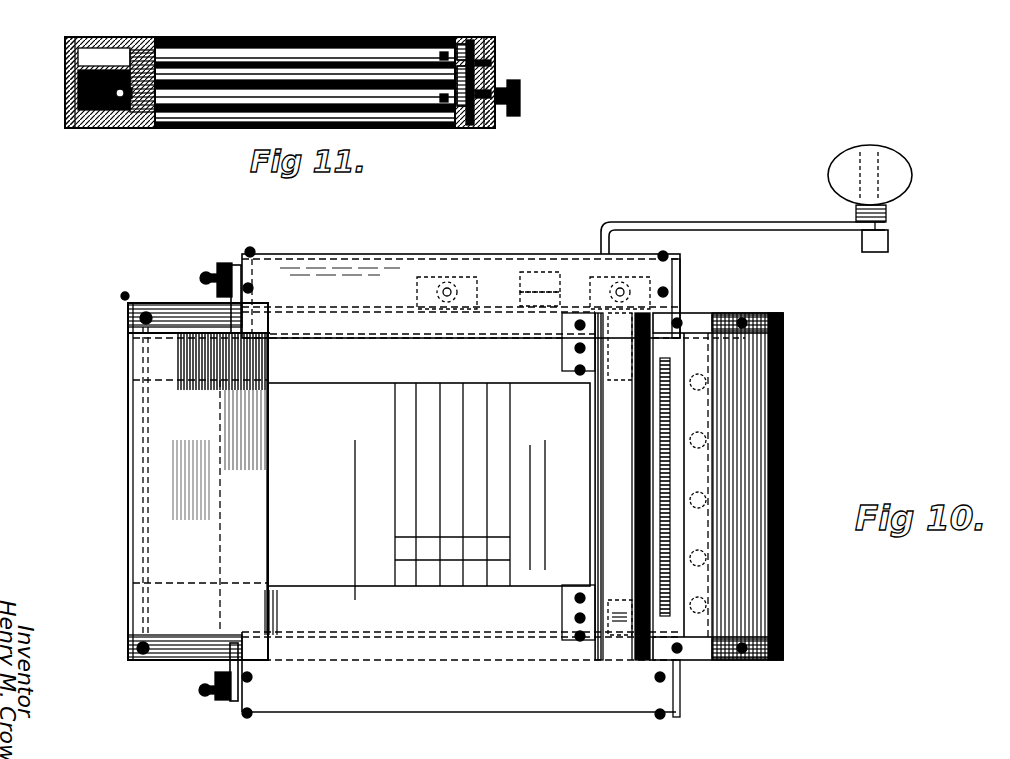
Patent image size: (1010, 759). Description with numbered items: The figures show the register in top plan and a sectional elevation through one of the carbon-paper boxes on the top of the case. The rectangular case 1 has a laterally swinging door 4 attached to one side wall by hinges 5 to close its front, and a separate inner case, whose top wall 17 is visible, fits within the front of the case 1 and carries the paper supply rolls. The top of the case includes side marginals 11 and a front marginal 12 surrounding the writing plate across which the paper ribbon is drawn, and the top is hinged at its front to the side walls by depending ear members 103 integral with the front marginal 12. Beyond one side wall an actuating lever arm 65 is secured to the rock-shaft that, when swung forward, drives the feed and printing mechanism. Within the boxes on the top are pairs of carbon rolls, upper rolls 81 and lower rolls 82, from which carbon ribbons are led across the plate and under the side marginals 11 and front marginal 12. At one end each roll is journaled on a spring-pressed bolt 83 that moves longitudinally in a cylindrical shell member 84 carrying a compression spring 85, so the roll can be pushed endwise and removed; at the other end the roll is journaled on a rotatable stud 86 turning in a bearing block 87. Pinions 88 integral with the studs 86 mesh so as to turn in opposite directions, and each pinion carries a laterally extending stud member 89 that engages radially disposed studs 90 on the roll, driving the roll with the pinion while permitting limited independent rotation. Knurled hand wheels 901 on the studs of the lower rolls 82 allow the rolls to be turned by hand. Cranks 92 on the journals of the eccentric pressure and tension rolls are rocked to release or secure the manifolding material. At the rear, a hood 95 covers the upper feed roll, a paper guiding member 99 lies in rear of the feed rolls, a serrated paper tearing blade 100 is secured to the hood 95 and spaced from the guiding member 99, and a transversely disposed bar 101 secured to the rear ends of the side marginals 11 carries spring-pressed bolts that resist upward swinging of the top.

In FIG. 10, the rectangular case 1 is at (775, 662).
In FIG. 10, the laterally swinging door 4 is at (128, 410).
In FIG. 10, the hinges 5 is at (127, 295).
In FIG. 10, the side marginals 11 is at (398, 262).
In FIG. 10, the front marginal 12 is at (150, 518).
In FIG. 10, the top wall 17 is at (366, 702).
In FIG. 10, the actuating lever arm 65 is at (812, 232).
In FIG. 11, the upper rolls 81 is at (178, 90).
In FIG. 11, the lower rolls 82 is at (208, 118).
In FIG. 11, the spring-pressed bolts 83 is at (125, 100).
In FIG. 11, the cylindrical shell members 84 is at (70, 78).
In FIG. 11, the compression springs 85 is at (75, 124).
In FIG. 11, the rotatable studs 86 is at (496, 98).
In FIG. 11, the bearing block 87 is at (492, 128).
In FIG. 11, the pinions 88 is at (468, 124).
In FIG. 11, the laterally extending stud member 89 is at (492, 52).
In FIG. 11, the radially disposed studs 90 is at (445, 100).
In FIG. 11, the knurled hand wheels 901 is at (522, 100).
In FIG. 10, the knurled hand wheels 901 is at (220, 263).
In FIG. 10, the cranks 92 is at (237, 264).
In FIG. 10, the hood 95 is at (712, 525).
In FIG. 10, the paper guiding member 99 is at (680, 350).
In FIG. 10, the paper tearing blade 100 is at (672, 410).
In FIG. 10, the transversely disposed bar 101 is at (700, 662).
In FIG. 10, the depending ear members 103 is at (160, 325).
In FIG. 10, the printed form P is at (429, 491).